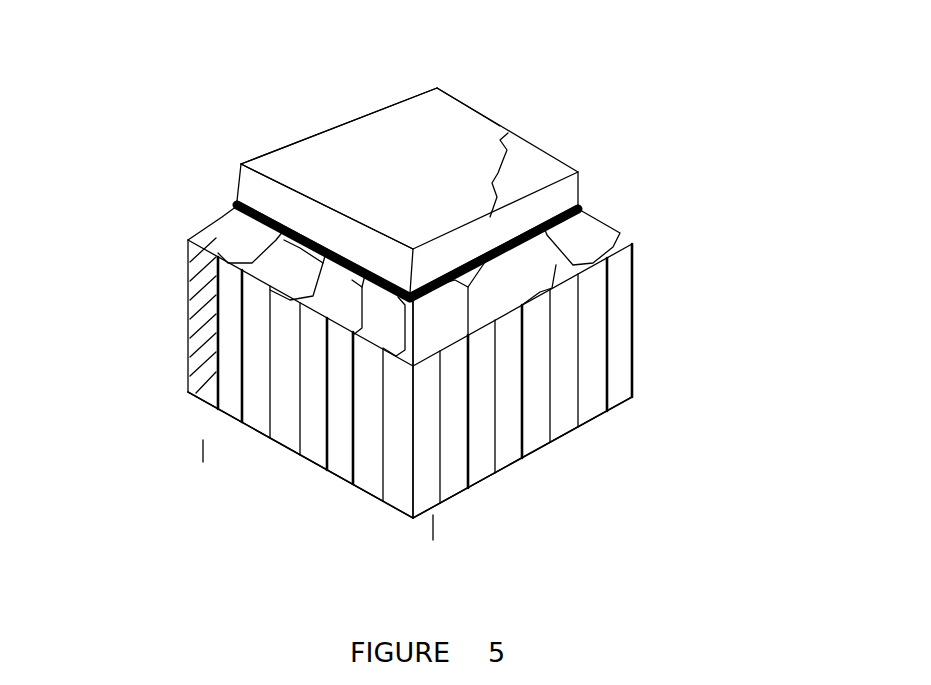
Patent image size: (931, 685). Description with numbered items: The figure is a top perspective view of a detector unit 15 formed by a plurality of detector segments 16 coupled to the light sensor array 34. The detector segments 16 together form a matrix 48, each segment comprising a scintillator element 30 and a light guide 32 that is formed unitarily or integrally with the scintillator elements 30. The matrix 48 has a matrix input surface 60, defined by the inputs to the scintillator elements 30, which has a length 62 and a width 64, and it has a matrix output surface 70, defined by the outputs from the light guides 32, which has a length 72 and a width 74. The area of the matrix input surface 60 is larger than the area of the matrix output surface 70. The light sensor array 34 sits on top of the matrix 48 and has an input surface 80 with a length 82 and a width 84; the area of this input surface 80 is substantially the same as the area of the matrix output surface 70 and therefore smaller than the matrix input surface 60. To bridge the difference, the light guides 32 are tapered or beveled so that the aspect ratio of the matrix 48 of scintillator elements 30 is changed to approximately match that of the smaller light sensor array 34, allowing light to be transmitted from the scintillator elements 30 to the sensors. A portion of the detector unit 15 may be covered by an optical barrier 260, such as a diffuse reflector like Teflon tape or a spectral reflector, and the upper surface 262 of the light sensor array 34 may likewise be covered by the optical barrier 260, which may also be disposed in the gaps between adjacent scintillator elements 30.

The detector unit 15 is at (725, 75).
The detector segments 16 is at (613, 240).
The scintillator elements 30 is at (203, 325).
The light guide 32 is at (230, 210).
The light sensor array 34 is at (552, 167).
The matrix 48 is at (668, 325).
The matrix input surface 60 is at (622, 410).
The length of input surface 62 is at (600, 205).
The width of input surface 64 is at (172, 463).
The matrix output surface 70 is at (233, 203).
The length of output surface 72 is at (607, 420).
The width of output surface 74 is at (206, 449).
The input surface of light sensor array 80 is at (590, 210).
The length of sensor array input surface 82 is at (465, 125).
The width of sensor array input surface 84 is at (417, 236).
The optical barrier 260 is at (483, 143).
The upper surface 262 is at (460, 110).